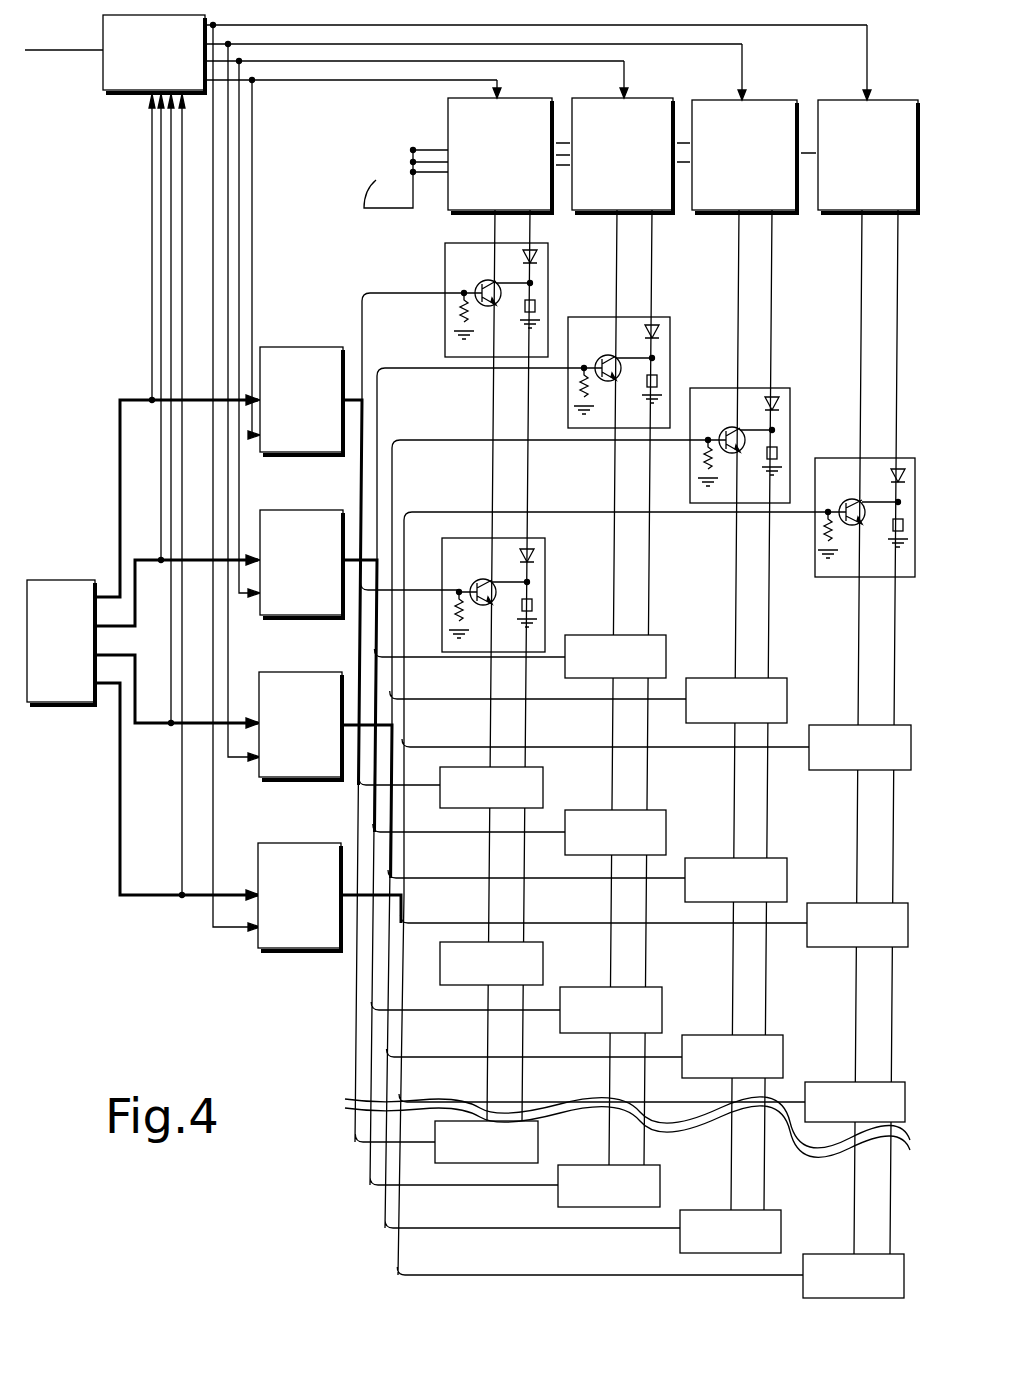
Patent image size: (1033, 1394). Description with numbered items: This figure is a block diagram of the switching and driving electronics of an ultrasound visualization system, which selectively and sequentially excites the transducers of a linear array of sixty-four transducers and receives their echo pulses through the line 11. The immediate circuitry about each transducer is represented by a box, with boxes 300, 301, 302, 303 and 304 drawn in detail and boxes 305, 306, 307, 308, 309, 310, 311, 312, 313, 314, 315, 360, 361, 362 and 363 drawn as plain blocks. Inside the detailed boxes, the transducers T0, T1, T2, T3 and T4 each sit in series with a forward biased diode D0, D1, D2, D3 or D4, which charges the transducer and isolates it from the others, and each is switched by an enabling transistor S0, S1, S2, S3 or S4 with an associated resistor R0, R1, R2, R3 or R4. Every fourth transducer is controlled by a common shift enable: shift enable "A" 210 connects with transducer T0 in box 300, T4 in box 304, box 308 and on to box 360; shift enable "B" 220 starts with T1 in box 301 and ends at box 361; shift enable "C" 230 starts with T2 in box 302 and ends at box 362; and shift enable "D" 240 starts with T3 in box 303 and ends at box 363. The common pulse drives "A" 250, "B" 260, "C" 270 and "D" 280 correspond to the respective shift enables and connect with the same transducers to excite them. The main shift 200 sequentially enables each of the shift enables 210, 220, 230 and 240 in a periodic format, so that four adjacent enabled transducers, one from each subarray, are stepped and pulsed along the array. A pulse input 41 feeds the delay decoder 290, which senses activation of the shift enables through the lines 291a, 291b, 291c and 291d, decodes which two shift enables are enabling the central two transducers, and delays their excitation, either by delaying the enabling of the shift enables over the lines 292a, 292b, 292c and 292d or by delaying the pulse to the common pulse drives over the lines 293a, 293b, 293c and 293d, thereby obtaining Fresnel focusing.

The pulse input line 41 is at (62, 52).
The delay decoder 290 is at (124, 93).
The line 291a is at (152, 193).
The line 291b is at (161, 237).
The line 291c is at (171, 275).
The line 291d is at (182, 311).
The line 292a is at (257, 157).
The line 292b is at (239, 190).
The line 292c is at (228, 224).
The line 292d is at (213, 260).
The line 293a is at (372, 80).
The line 293b is at (624, 72).
The line 293c is at (742, 56).
The line 293d is at (867, 38).
The common pulse drive "A" 250 is at (503, 98).
The common pulse drive "B" 260 is at (626, 98).
The common pulse drive "C" 270 is at (748, 100).
The common pulse drive "D" 280 is at (908, 102).
The line 11 is at (406, 178).
The main shift 200 is at (62, 580).
The shift enable "A" 210 is at (298, 347).
The shift enable "B" 220 is at (316, 510).
The shift enable "C" 230 is at (318, 674).
The shift enable "D" 240 is at (318, 844).
The box 300 is at (494, 286).
The box 301 is at (617, 342).
The box 302 is at (739, 415).
The box 303 is at (847, 518).
The box 304 is at (504, 582).
The box 305 is at (660, 635).
The box 306 is at (782, 678).
The box 307 is at (853, 725).
The box 308 is at (543, 780).
The box 309 is at (662, 810).
The box 310 is at (790, 852).
The box 311 is at (838, 896).
The box 312 is at (540, 948).
The box 313 is at (660, 987).
The box 314 is at (782, 1035).
The box 315 is at (833, 1074).
The box 360 is at (538, 1138).
The box 361 is at (668, 1160).
The box 362 is at (786, 1202).
The box 363 is at (838, 1246).
The enabling transistor S0 is at (472, 281).
The enabling transistor S1 is at (612, 335).
The enabling transistor S2 is at (734, 407).
The enabling transistor S3 is at (859, 476).
The enabling transistor S4 is at (488, 560).
The diode D0 is at (553, 243).
The diode D1 is at (667, 310).
The diode D2 is at (788, 384).
The diode D3 is at (885, 454).
The diode D4 is at (549, 537).
The transducer T0 is at (553, 295).
The transducer T1 is at (667, 369).
The transducer T2 is at (792, 440).
The transducer T3 is at (876, 563).
The transducer T4 is at (547, 602).
The resistor R0 is at (438, 316).
The resistor R1 is at (565, 391).
The resistor R2 is at (687, 463).
The resistor R3 is at (809, 535).
The resistor R4 is at (438, 615).